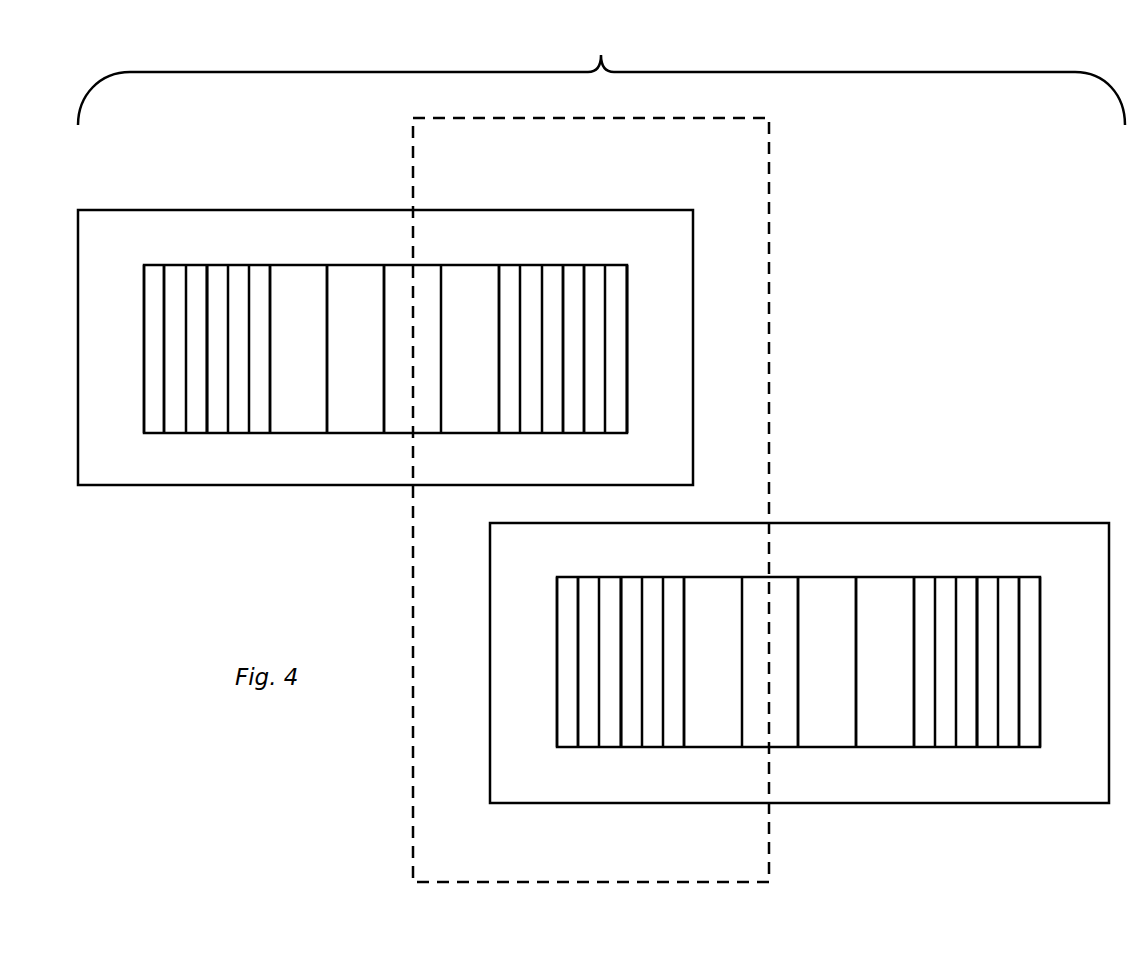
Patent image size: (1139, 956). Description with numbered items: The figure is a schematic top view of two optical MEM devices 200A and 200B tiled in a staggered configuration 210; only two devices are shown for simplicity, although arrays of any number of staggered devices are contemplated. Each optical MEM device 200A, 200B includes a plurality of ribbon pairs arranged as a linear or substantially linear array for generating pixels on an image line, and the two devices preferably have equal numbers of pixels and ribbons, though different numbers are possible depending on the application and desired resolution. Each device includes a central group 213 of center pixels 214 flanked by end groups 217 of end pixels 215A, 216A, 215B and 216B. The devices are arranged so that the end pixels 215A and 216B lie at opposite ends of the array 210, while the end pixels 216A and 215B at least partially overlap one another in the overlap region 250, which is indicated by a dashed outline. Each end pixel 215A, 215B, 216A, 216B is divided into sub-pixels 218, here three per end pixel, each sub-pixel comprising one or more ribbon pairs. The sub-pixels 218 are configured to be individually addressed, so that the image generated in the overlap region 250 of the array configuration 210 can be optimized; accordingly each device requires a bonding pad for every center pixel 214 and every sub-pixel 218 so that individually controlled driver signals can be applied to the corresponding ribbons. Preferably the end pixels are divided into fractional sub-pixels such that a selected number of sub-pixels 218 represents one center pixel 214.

The staggered configuration 210 is at (601, 76).
The overlap region 250 is at (772, 322).
The optical MEM device 200A is at (110, 487).
The optical MEM device 200B is at (868, 522).
The central group 213 is at (499, 437).
The center pixel 214 is at (293, 278).
The end group 217 is at (144, 437).
The sub-pixel 218 is at (158, 312).
The end pixel 215A is at (270, 260).
The end pixel 216A is at (627, 260).
The end pixel 215B is at (684, 761).
The end pixel 216B is at (914, 761).